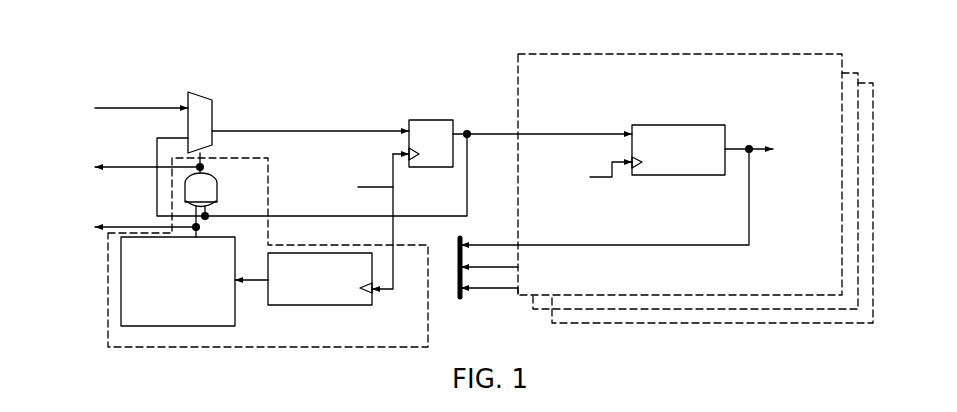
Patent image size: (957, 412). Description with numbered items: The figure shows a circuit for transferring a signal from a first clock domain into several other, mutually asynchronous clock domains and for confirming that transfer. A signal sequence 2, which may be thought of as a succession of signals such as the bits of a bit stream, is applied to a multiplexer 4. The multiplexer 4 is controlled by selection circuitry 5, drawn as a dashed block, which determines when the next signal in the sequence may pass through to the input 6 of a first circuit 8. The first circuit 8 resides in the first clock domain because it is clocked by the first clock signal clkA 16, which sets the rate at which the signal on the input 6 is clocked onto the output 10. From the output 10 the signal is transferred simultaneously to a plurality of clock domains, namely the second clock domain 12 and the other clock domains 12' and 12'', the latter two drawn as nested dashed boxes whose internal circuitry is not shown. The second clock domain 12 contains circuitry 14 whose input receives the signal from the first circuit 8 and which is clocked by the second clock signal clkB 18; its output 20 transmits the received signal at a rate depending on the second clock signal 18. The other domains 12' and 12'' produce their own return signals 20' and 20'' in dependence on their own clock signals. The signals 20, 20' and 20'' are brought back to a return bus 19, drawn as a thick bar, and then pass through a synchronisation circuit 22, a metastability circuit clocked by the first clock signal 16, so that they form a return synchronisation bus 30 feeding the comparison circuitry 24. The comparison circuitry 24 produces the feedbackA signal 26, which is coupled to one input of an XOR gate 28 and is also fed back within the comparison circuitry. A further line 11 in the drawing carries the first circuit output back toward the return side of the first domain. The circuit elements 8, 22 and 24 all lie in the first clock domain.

The signal sequence 2 is at (137, 106).
The multiplexer 4 is at (204, 93).
The selection circuitry 5 is at (107, 283).
The input 6 is at (314, 129).
The first circuit 8 is at (431, 119).
The output 10 is at (492, 132).
The return A bus feedback line 11 is at (301, 214).
The second clock domain 12 is at (683, 158).
The other clock domain 12' is at (718, 187).
The other clock domain 12'' is at (738, 203).
The circuitry 14 is at (680, 124).
The first clock signal clkA 16 is at (392, 165).
The second clock signal clkB 18 is at (603, 180).
The return bus 19 is at (462, 298).
The output 20 is at (605, 198).
The return signal 20' is at (489, 260).
The return signal 20'' is at (489, 283).
The synchronisation circuit 22 is at (373, 297).
The comparison circuitry 24 is at (178, 281).
The feedbackA signal 26 is at (127, 226).
The XOR gate 28 is at (218, 185).
The return synchronisation bus 30 is at (256, 282).